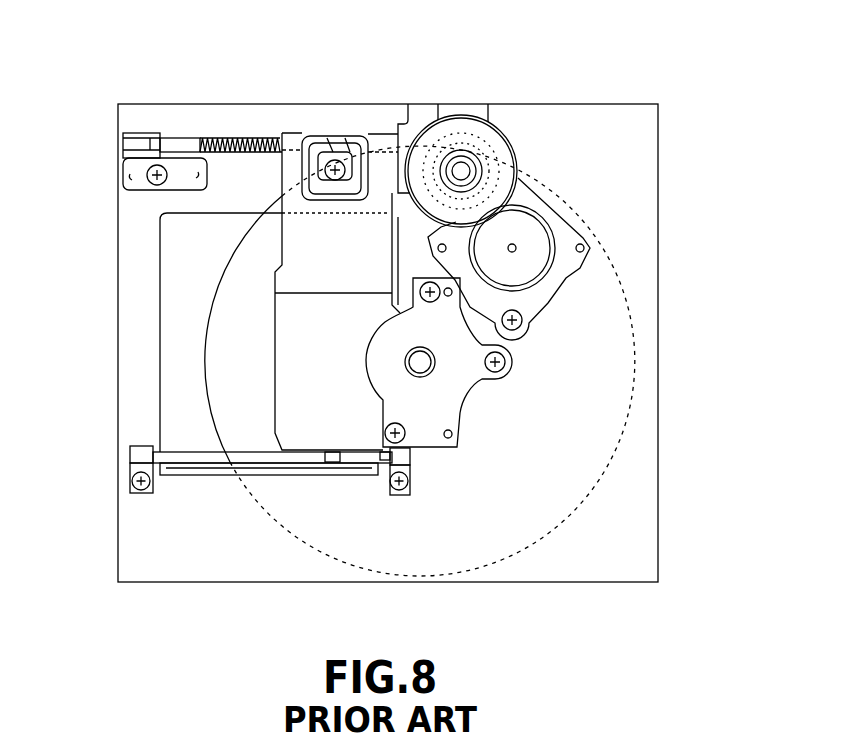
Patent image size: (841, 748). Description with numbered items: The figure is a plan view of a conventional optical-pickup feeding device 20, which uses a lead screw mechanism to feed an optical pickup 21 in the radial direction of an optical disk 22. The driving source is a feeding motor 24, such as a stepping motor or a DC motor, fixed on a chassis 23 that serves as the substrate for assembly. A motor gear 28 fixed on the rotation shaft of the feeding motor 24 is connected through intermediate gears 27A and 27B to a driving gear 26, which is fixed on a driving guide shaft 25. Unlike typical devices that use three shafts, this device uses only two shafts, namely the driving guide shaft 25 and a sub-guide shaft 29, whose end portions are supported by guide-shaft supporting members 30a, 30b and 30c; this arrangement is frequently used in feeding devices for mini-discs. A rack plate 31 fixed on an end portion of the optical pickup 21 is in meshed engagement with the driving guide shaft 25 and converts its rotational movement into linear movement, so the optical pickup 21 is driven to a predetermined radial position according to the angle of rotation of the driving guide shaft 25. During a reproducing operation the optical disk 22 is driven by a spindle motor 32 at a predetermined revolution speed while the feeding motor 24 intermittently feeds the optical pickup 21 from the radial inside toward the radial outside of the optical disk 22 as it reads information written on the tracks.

The optical-pickup feeding device 20 is at (273, 34).
The optical pickup 21 is at (300, 373).
The optical disk 22 is at (212, 290).
The chassis 23 is at (612, 528).
The feeding motor 24 is at (562, 222).
The driving guide shaft 25 is at (180, 146).
The driving gear 26 is at (457, 137).
The intermediate gear 27A is at (522, 162).
The intermediate gear 27B is at (480, 170).
The motor gear 28 is at (550, 280).
The sub-guide shaft 29 is at (207, 458).
The guide-shaft supporting member 30a is at (132, 133).
The guide-shaft supporting member 30b is at (418, 114).
The guide-shaft supporting member 30c is at (143, 460).
The rack plate 31 is at (313, 140).
The spindle motor 32 is at (457, 387).